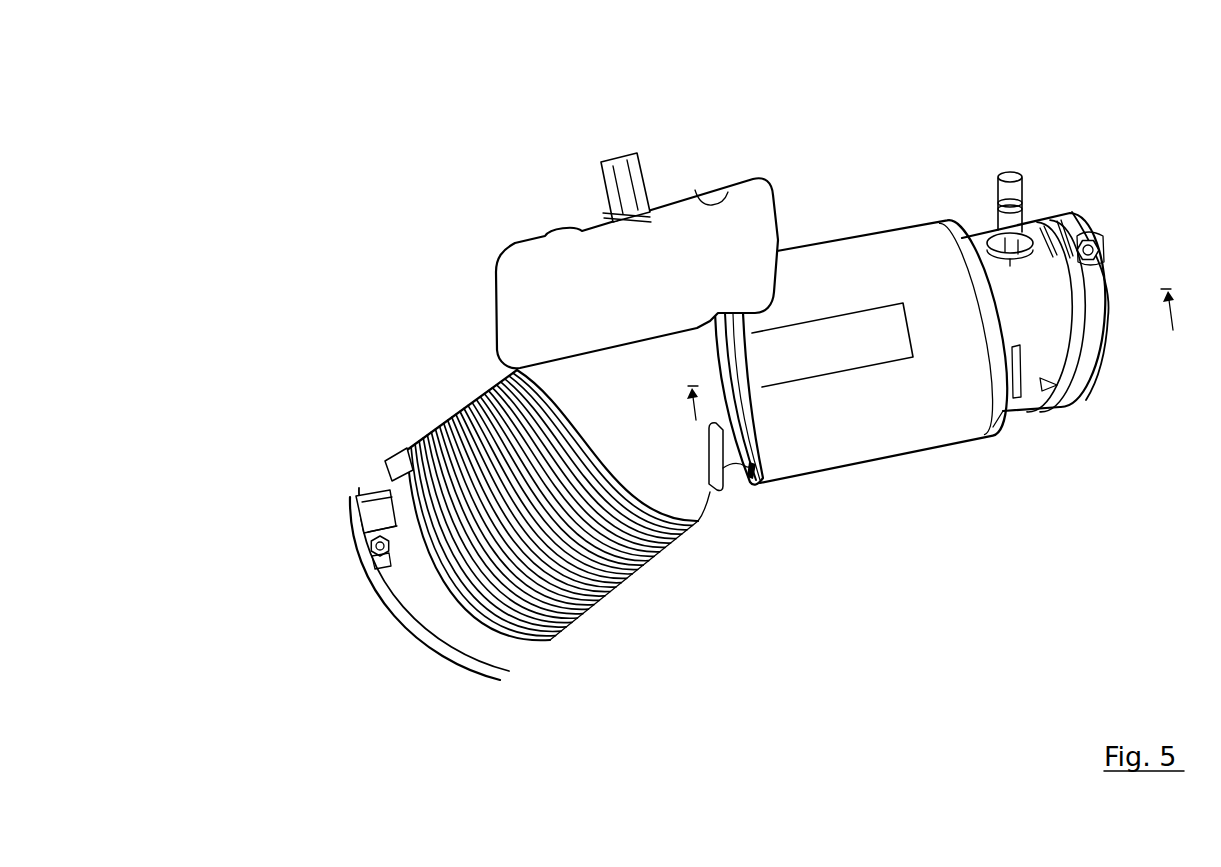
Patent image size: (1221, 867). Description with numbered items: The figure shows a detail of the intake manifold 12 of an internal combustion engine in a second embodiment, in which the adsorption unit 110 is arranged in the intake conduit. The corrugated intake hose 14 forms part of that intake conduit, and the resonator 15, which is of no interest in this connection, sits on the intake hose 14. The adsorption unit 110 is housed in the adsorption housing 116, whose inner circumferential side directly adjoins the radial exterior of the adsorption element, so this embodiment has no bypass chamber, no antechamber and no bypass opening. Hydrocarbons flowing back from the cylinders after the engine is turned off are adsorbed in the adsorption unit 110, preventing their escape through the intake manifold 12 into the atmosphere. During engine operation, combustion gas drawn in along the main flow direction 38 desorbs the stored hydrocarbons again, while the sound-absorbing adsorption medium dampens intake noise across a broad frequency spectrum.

The intake manifold 12 is at (680, 398).
The intake hose 14 is at (434, 438).
The resonator 15 is at (511, 257).
The main flow direction 38 is at (377, 626).
The adsorption unit 110 is at (775, 274).
The adsorption housing 116 is at (862, 224).